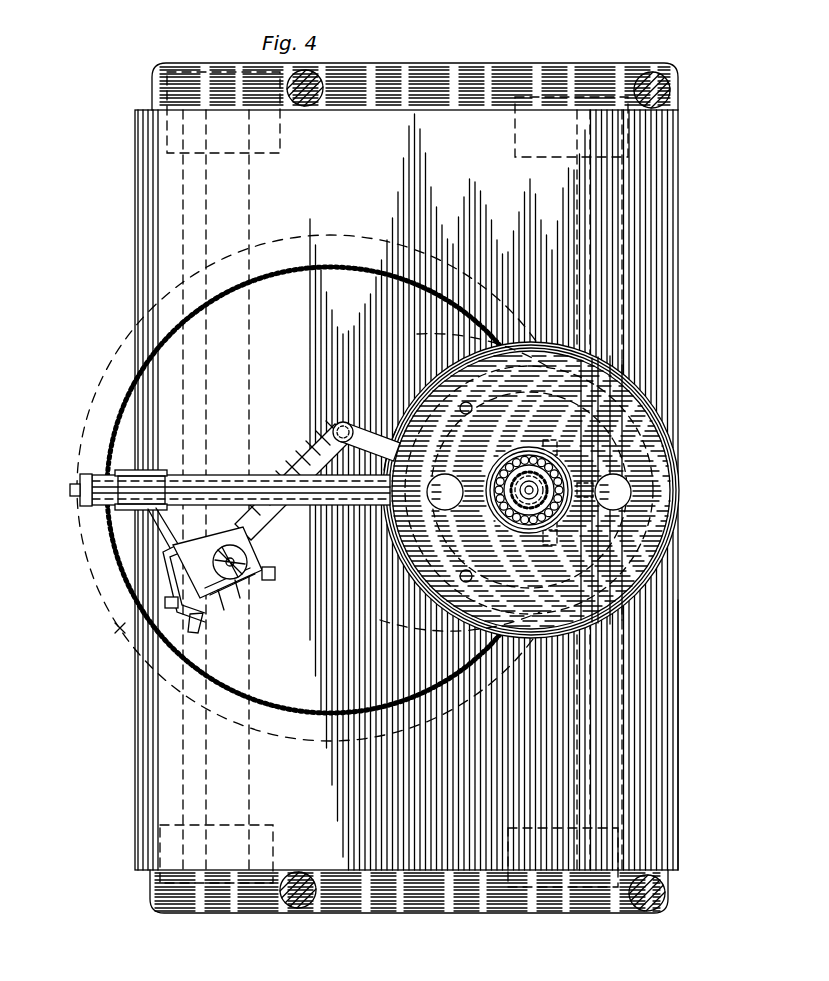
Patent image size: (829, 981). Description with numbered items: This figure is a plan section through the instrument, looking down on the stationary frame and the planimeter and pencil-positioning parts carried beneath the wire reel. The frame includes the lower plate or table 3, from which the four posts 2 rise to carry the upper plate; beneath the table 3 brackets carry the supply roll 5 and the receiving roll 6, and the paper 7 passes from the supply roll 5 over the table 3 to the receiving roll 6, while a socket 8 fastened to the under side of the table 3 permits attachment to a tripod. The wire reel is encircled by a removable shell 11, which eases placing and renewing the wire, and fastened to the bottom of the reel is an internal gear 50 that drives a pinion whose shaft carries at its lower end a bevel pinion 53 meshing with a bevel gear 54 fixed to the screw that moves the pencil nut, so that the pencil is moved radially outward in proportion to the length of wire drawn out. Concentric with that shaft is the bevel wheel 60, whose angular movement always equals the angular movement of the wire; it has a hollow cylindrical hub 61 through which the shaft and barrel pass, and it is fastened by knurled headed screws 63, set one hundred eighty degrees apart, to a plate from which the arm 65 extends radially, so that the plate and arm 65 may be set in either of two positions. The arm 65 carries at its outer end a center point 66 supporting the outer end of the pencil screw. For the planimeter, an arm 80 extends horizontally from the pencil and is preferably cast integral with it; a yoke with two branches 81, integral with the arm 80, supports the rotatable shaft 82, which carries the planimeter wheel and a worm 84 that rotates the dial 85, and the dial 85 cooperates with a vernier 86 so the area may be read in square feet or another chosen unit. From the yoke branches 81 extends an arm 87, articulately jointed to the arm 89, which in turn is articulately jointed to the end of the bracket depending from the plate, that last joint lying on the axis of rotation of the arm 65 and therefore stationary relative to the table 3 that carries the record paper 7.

The posts 2 is at (312, 80).
The lower plate or table 3 is at (676, 748).
The supply roll 5 is at (155, 764).
The receiving roll 6 is at (618, 797).
The paper 7 is at (680, 207).
The socket 8 is at (392, 555).
The removable shell 11 is at (150, 620).
The internal gear 50 is at (130, 580).
The bevel pinion 53 is at (522, 512).
The bevel gear 54 is at (548, 548).
The bevel wheel 60 is at (679, 528).
The hollow cylindrical hub 61 is at (556, 480).
The knurled headed screws 63 is at (447, 505).
The arm 65 is at (236, 468).
The center point 66 is at (70, 490).
The arm 80 is at (170, 520).
The yoke branches 81 is at (270, 594).
The rotatable shaft 82 is at (224, 612).
The worm 84 is at (239, 596).
The dial 85 is at (246, 557).
The vernier 86 is at (228, 538).
The arm 87 is at (314, 460).
The arm 89 is at (352, 426).